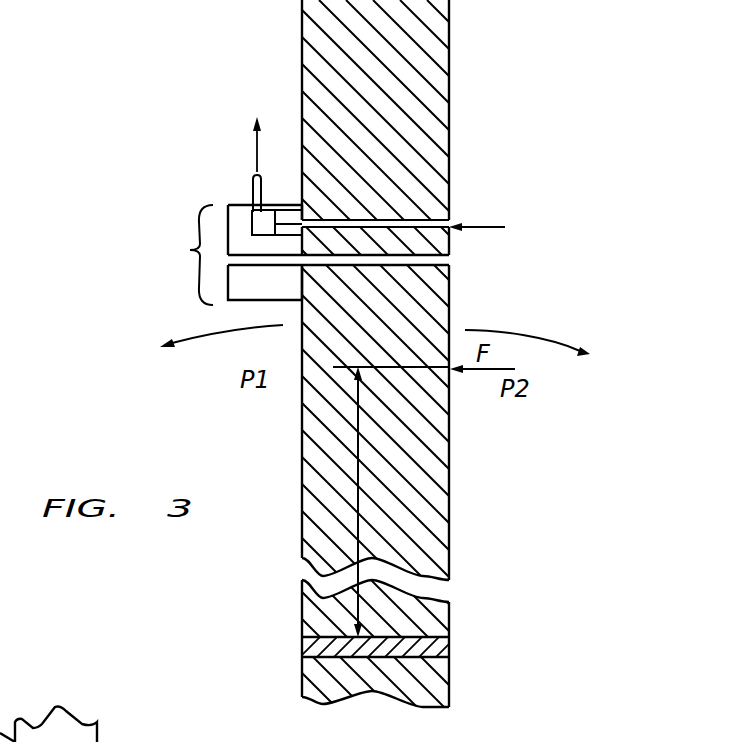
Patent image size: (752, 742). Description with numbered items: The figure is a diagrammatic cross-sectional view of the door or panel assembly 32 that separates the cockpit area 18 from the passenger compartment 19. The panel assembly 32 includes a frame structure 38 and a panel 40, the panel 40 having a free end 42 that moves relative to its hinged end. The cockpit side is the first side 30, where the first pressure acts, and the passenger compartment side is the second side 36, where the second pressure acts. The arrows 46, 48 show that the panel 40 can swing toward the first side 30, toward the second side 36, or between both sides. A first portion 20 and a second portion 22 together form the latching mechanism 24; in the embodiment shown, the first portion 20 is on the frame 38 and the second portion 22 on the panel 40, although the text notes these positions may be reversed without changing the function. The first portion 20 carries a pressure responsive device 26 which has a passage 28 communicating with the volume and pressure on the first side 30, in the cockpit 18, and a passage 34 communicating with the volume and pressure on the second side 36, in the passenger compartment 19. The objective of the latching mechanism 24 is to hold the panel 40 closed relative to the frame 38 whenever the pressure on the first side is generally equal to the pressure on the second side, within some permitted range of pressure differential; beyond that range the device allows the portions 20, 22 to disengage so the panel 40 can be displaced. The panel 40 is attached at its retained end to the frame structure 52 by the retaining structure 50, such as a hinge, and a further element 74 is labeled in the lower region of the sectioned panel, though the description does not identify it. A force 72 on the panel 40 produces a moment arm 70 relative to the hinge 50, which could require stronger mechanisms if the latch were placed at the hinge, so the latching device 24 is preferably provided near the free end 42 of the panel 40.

The cockpit area 18 is at (175, 424).
The passenger compartment 19 is at (603, 438).
The first portion 20 is at (228, 205).
The second portion 22 is at (228, 300).
The latching mechanism 24 is at (178, 250).
The pressure responsive device 26 is at (242, 212).
The passage 28 is at (258, 196).
The first side 30 is at (141, 46).
The panel assembly 32 is at (538, 284).
The passage 34 is at (428, 221).
The second side 36 is at (611, 106).
The frame structure 38 is at (452, 128).
The panel 40 is at (449, 470).
The free end 42 is at (449, 290).
The arrow 46 is at (202, 333).
The arrow 48 is at (537, 342).
The retaining structure 50 is at (457, 645).
The frame structure 52 is at (449, 692).
The moment arm 70 is at (362, 477).
The force 72 is at (475, 380).
The wall segment 74 is at (449, 622).